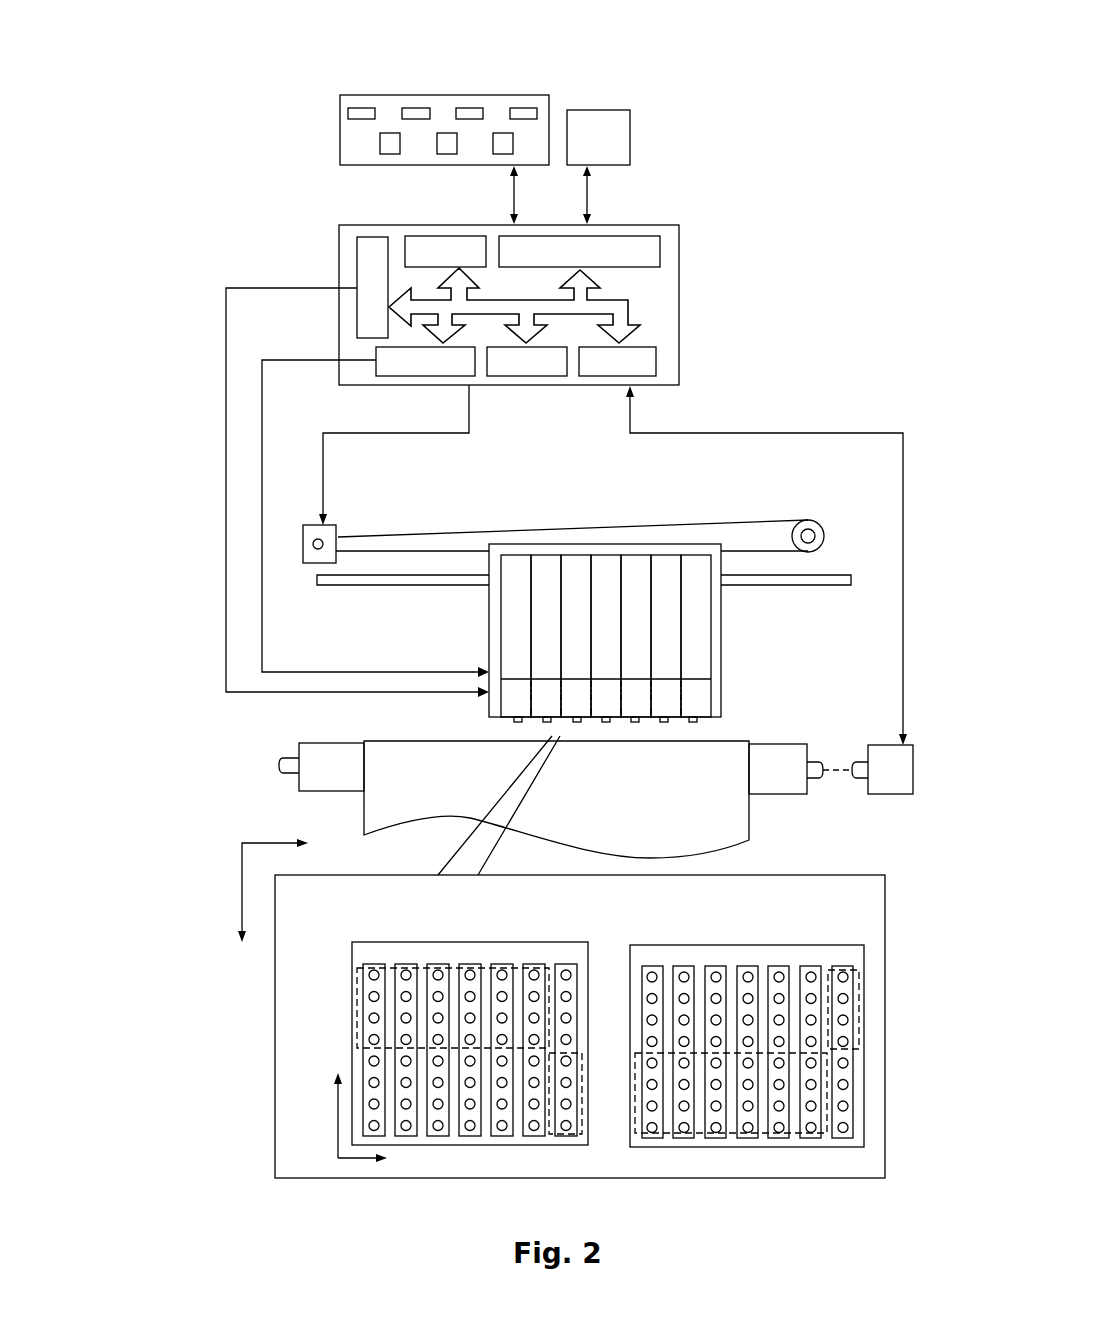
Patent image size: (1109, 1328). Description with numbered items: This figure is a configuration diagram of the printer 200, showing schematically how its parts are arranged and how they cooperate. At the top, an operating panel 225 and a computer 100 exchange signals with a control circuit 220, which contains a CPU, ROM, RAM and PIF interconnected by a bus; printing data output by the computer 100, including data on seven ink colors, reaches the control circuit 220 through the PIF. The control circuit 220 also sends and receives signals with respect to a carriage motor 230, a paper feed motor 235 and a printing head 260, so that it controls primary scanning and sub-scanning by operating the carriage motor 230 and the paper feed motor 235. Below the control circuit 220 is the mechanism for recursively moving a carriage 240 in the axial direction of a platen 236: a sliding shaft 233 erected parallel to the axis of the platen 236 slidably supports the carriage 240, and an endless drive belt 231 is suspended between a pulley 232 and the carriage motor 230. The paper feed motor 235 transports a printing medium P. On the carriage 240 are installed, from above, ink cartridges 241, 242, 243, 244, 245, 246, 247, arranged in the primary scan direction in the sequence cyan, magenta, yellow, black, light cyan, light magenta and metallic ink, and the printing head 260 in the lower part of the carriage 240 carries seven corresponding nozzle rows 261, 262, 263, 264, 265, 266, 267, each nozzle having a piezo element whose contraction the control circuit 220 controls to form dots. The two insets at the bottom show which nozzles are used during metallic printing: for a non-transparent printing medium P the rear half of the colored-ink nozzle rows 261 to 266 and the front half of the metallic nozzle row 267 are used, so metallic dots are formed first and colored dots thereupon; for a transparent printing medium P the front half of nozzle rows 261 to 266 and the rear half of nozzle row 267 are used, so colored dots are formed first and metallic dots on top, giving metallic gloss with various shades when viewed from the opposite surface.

The printer 200 is at (258, 96).
The operating panel 225 is at (488, 95).
The computer 100 is at (602, 110).
The control circuit 220 is at (680, 282).
The carriage motor 230 is at (303, 564).
The endless drive belt 231 is at (390, 535).
The pulley 232 is at (793, 521).
The sliding shaft 233 is at (373, 580).
The carriage 240 is at (672, 630).
The ink cartridge 241 is at (505, 622).
The ink cartridge 242 is at (546, 636).
The ink cartridge 243 is at (576, 636).
The ink cartridge 244 is at (606, 636).
The ink cartridge 245 is at (636, 636).
The ink cartridge 246 is at (666, 636).
The ink cartridge 247 is at (721, 665).
The printing head 260 is at (580, 936).
The nozzle row 261 is at (500, 722).
The nozzle row 262 is at (547, 719).
The nozzle row 263 is at (577, 719).
The nozzle row 264 is at (606, 719).
The nozzle row 265 is at (635, 719).
The nozzle row 266 is at (664, 719).
The nozzle row 267 is at (693, 719).
The platen 236 is at (787, 795).
The paper feed motor 235 is at (888, 796).
The printing medium P is at (727, 835).